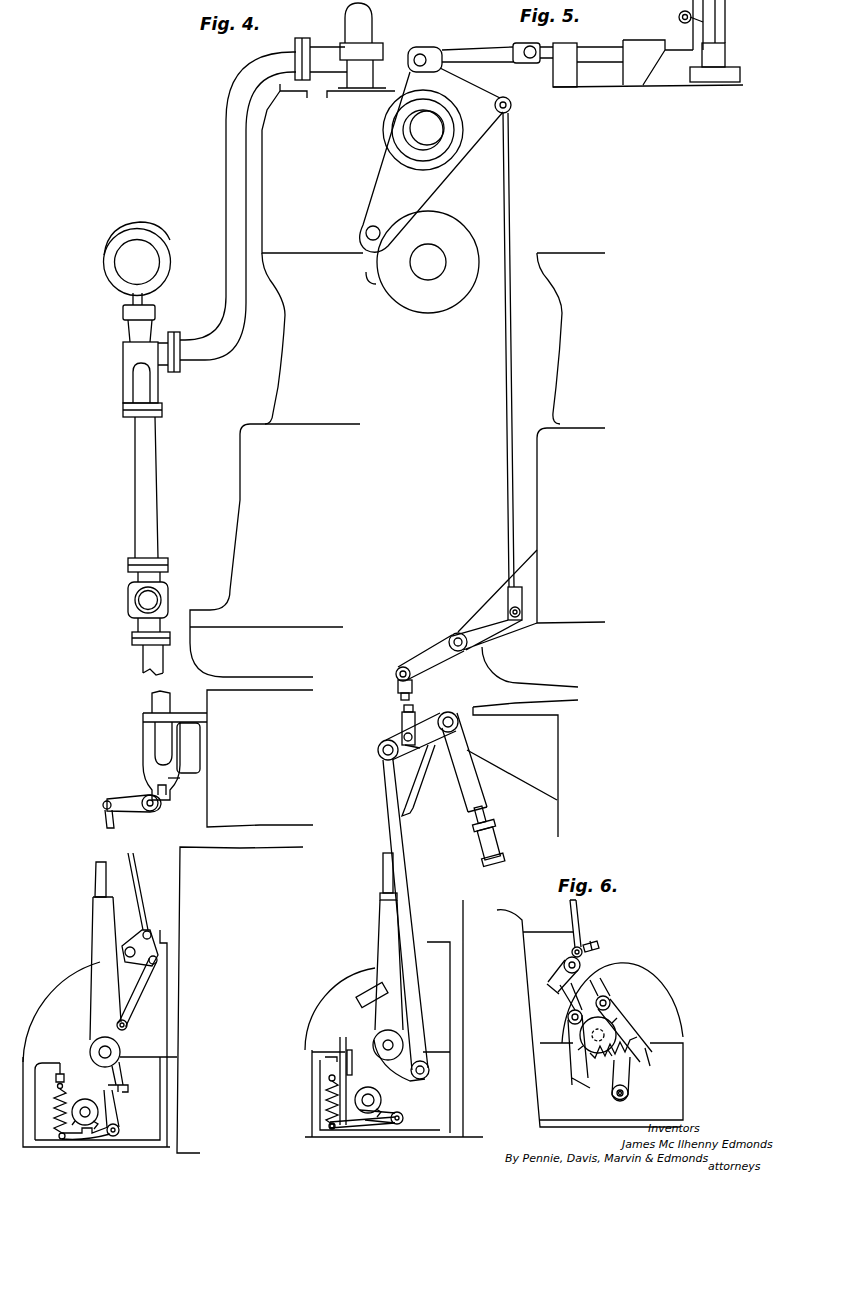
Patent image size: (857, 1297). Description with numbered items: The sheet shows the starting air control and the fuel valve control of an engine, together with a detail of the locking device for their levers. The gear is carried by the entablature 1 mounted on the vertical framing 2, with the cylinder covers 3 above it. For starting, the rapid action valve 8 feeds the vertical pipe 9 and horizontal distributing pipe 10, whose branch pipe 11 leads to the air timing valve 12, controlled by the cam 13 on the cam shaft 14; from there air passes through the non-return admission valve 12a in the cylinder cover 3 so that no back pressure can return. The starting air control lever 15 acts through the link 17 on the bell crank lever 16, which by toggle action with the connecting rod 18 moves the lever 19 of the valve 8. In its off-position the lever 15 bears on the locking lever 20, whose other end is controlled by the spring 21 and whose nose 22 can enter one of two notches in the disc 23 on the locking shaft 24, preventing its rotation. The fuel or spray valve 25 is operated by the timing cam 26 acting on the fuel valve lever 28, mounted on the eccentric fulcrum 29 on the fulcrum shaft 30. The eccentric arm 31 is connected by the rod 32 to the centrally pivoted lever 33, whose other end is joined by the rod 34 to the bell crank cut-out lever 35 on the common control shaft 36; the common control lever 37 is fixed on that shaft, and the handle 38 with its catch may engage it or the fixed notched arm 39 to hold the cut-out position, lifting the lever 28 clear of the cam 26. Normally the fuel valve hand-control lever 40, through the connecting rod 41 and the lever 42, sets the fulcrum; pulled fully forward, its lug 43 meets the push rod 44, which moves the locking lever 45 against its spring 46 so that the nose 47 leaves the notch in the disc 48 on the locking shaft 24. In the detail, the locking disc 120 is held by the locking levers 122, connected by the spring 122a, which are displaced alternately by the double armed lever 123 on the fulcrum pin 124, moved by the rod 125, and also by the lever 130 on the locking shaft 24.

In FIG. 4, the entablature 1 is at (275, 550).
In FIG. 5, the entablature 1 is at (571, 525).
In FIG. 5, the vertical framing 2 is at (522, 742).
In FIG. 4, the cylinder cover 3 is at (328, 254).
In FIG. 5, the cylinder cover 3 is at (571, 286).
In FIG. 4, the rapid action valve 8 is at (158, 742).
In FIG. 4, the vertical pipe 9 is at (145, 661).
In FIG. 4, the horizontal distributing pipe 10 is at (128, 600).
In FIG. 4, the branch pipe 11 is at (142, 478).
In FIG. 4, the air timing valve 12 is at (135, 355).
In FIG. 4, the non-return admission valve 12a is at (367, 50).
In FIG. 4, the cam 13 is at (131, 224).
In FIG. 4, the cam shaft 14 is at (138, 261).
In FIG. 5, the cam shaft 14 is at (426, 270).
In FIG. 4, the starting air control lever 15 is at (97, 905).
In FIG. 4, the bell crank lever 16 is at (132, 957).
In FIG. 4, the link 17 is at (140, 990).
In FIG. 4, the connecting rod 18 is at (130, 855).
In FIG. 4, the lever 19 is at (128, 802).
In FIG. 4, the locking lever 20 is at (125, 1110).
In FIG. 4, the spring 21 is at (55, 1108).
In FIG. 4, the nose 22 is at (86, 1148).
In FIG. 4, the disc 23 is at (84, 1102).
In FIG. 4, the locking shaft 24 is at (65, 1152).
In FIG. 5, the locking shaft 24 is at (365, 1110).
In FIG. 6, the locking shaft 24 is at (618, 1101).
In FIG. 5, the fuel or spray valve 25 is at (720, 67).
In FIG. 5, the timing cam 26 is at (445, 295).
In FIG. 5, the fuel valve lever 28 is at (390, 185).
In FIG. 5, the eccentric fulcrum 29 is at (415, 157).
In FIG. 5, the fulcrum shaft 30 is at (423, 127).
In FIG. 5, the eccentric arm 31 is at (468, 112).
In FIG. 5, the rod 32 is at (508, 430).
In FIG. 5, the lever 33 is at (430, 655).
In FIG. 5, the rod 34 is at (399, 702).
In FIG. 5, the bell crank cut-out lever 35 is at (422, 727).
In FIG. 5, the common control shaft 36 is at (458, 721).
In FIG. 5, the common control lever 37 is at (465, 762).
In FIG. 5, the handle 38 is at (491, 834).
In FIG. 5, the arm 39 is at (412, 792).
In FIG. 5, the fuel valve hand-control lever 40 is at (385, 915).
In FIG. 5, the connecting rod 41 is at (420, 985).
In FIG. 5, the lever 42 is at (412, 748).
In FIG. 5, the lug 43 is at (365, 992).
In FIG. 5, the push rod 44 is at (340, 1062).
In FIG. 5, the locking lever 45 is at (362, 1126).
In FIG. 5, the spring 46 is at (325, 1100).
In FIG. 5, the nose 47 is at (372, 1120).
In FIG. 5, the disc 48 is at (381, 1098).
In FIG. 6, the locking disc 120 is at (606, 1024).
In FIG. 6, the locking lever 122 is at (605, 1010).
In FIG. 6, the spring 122a is at (642, 1003).
In FIG. 6, the double armed lever 123 is at (555, 985).
In FIG. 6, the fulcrum pin 124 is at (600, 952).
In FIG. 6, the rod 125 is at (581, 913).
In FIG. 6, the lever 130 is at (628, 1072).